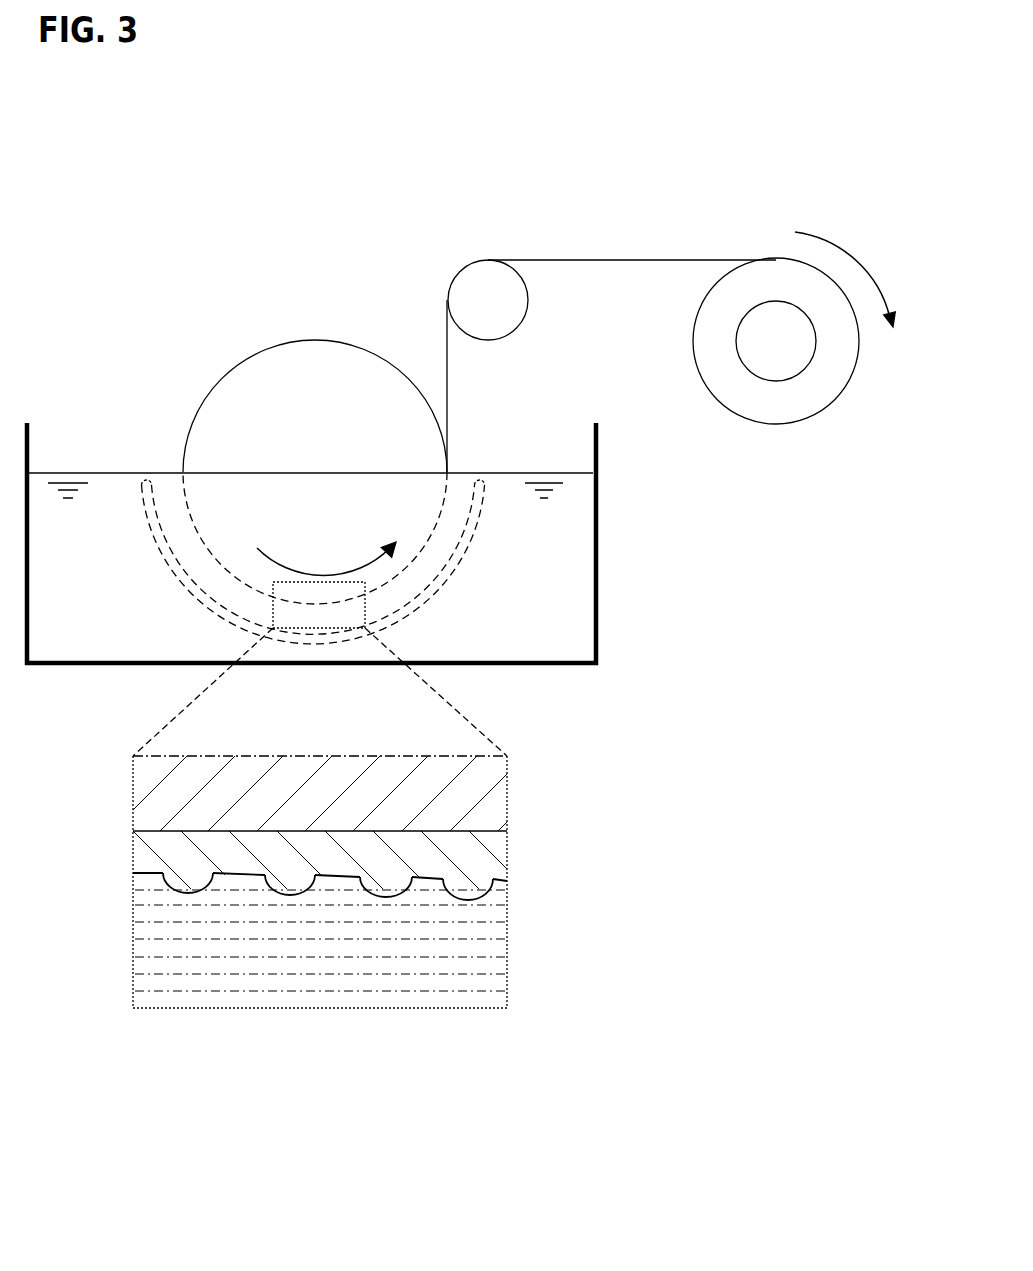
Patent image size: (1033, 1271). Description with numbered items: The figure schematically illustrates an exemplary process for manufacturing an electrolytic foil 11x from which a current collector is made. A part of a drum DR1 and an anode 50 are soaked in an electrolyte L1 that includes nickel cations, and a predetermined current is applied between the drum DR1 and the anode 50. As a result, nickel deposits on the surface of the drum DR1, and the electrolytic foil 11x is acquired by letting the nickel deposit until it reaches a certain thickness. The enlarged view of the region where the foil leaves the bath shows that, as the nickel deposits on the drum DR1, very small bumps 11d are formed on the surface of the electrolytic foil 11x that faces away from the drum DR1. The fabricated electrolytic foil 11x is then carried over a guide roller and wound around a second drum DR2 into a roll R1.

The drum DR1 is at (315, 340).
The drum DR2 is at (775, 383).
The roll R1 is at (848, 405).
The electrolytic foil 11x is at (592, 258).
The very small bumps 11d is at (285, 893).
The anode 50 is at (483, 516).
The electrolyte L1 is at (570, 566).